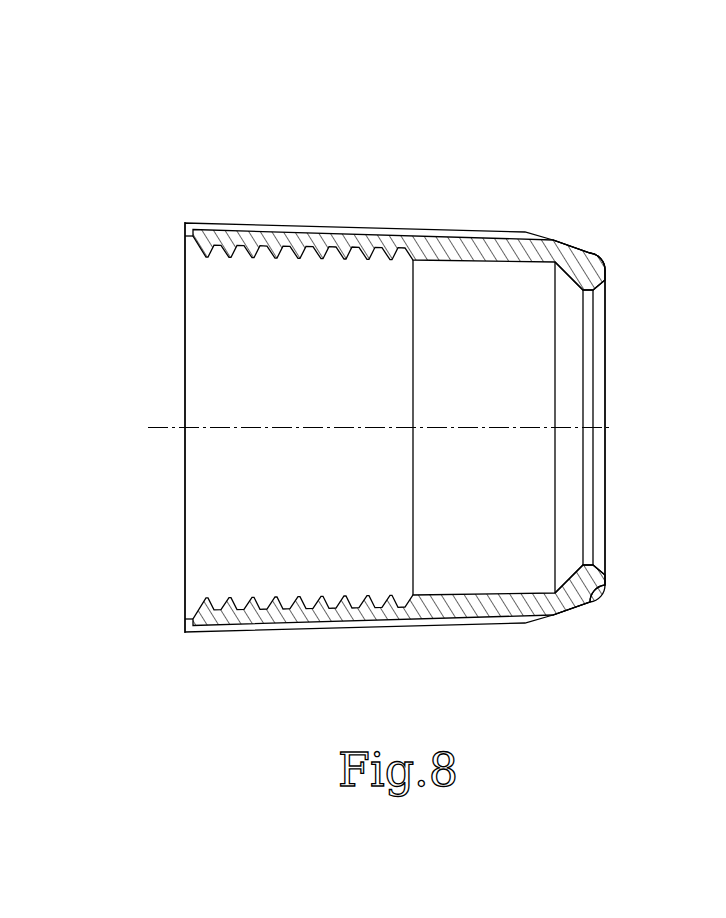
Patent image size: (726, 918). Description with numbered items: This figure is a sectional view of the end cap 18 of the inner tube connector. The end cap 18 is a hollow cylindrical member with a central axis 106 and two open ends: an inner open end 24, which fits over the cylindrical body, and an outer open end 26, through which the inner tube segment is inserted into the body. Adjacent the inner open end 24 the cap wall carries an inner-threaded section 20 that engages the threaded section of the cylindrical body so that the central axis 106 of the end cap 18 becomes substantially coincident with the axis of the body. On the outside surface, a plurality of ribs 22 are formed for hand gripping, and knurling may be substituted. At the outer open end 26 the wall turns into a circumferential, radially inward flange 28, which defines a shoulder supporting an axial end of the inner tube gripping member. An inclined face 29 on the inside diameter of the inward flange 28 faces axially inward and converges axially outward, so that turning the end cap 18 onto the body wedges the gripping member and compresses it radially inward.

The end cap 18 is at (456, 143).
The inner-threaded section 20 is at (245, 259).
The ribs 22 is at (288, 226).
The inner open end 24 is at (185, 245).
The outer open end 26 is at (583, 252).
The radially inward flange 28 is at (600, 255).
The inclined face 29 is at (572, 284).
The central axis 106 is at (184, 428).